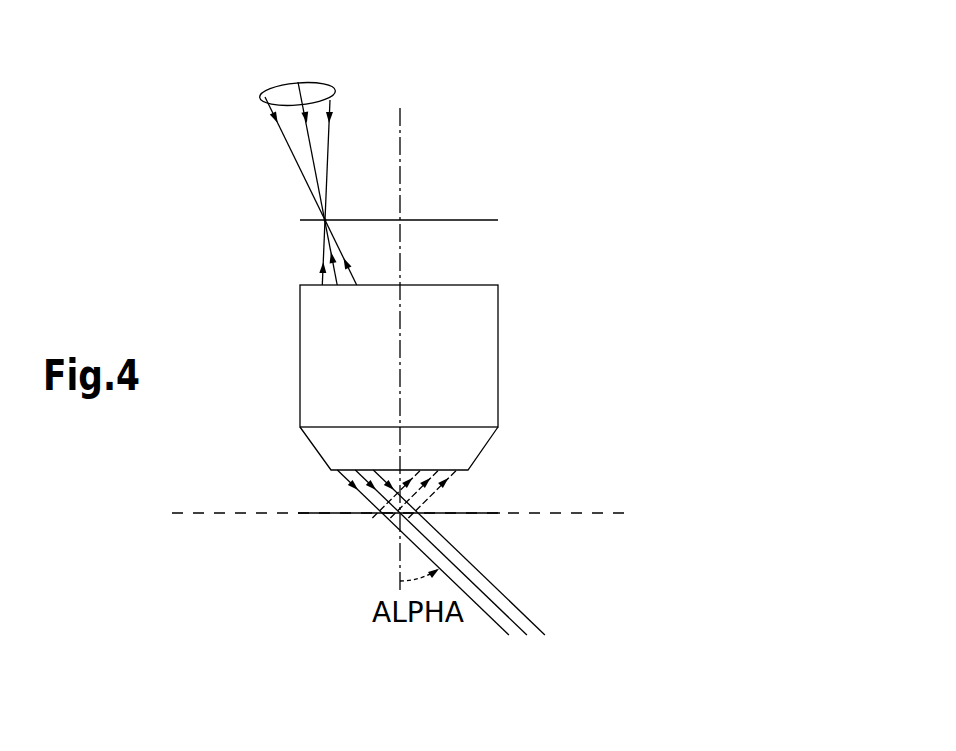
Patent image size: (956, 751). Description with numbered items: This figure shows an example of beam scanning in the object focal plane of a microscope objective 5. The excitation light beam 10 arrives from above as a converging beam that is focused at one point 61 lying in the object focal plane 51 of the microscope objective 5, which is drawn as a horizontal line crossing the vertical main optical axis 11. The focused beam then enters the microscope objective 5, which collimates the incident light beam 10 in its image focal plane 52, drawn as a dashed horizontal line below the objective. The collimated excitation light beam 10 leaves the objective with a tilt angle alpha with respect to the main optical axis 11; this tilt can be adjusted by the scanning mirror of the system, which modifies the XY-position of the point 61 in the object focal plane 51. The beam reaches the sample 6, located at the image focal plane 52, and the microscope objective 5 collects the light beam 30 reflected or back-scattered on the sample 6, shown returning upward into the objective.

The microscope objective 5 is at (477, 325).
The sample 6 is at (333, 515).
The excitation light beam 10 is at (284, 83).
The optical axis 11 is at (400, 124).
The light beam reflected or back-scattered on the sample 30 is at (321, 263).
The object focal plane 51 is at (473, 220).
The image focal plane 52 is at (597, 513).
The focal point 61 is at (326, 218).